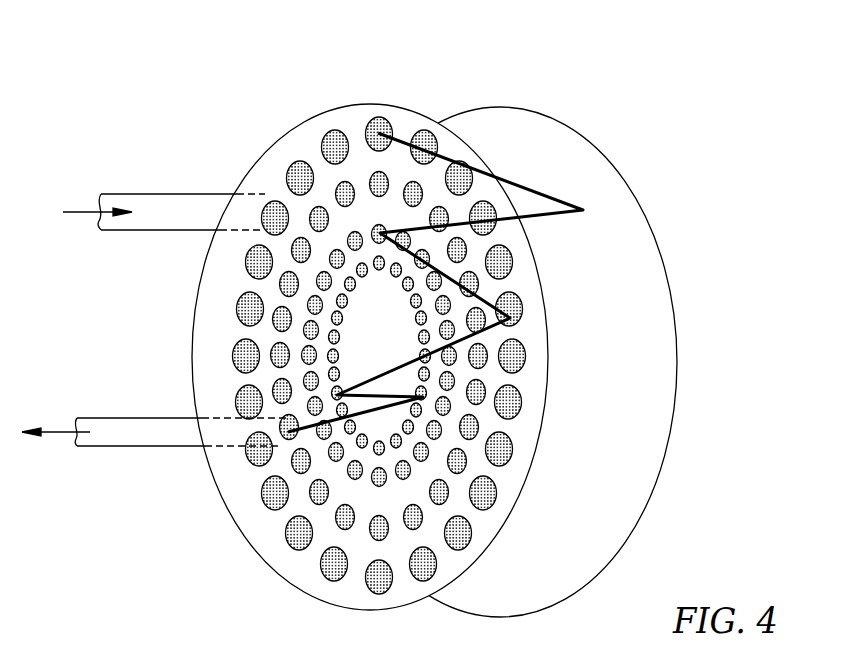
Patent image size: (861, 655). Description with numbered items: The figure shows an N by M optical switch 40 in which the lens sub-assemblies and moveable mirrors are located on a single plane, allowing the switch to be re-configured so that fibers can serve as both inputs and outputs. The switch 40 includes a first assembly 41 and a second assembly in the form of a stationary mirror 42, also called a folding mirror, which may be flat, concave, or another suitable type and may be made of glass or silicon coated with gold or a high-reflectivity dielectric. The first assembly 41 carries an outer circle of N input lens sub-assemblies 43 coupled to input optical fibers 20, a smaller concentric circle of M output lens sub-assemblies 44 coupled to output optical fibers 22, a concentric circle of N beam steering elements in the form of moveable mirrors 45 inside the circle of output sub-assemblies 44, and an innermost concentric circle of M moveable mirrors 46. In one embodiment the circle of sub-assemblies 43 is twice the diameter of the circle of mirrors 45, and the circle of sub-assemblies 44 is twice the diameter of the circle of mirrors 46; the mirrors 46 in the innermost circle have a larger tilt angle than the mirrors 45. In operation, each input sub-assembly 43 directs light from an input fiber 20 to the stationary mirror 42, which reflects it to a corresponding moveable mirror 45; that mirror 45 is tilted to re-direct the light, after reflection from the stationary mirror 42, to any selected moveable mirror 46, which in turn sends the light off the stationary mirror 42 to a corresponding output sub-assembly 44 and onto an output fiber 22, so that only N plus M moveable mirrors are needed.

The N×M optical switch 40 is at (439, 309).
The first assembly 41 is at (293, 142).
The stationary mirror 42 is at (650, 238).
The input lens sub-assemblies 43 is at (337, 134).
The output lens sub-assemblies 44 is at (295, 468).
The moveable mirrors 45 is at (362, 252).
The moveable mirrors 46 is at (341, 354).
The input optical fibers 20 is at (150, 202).
The output optical fibers 22 is at (106, 422).